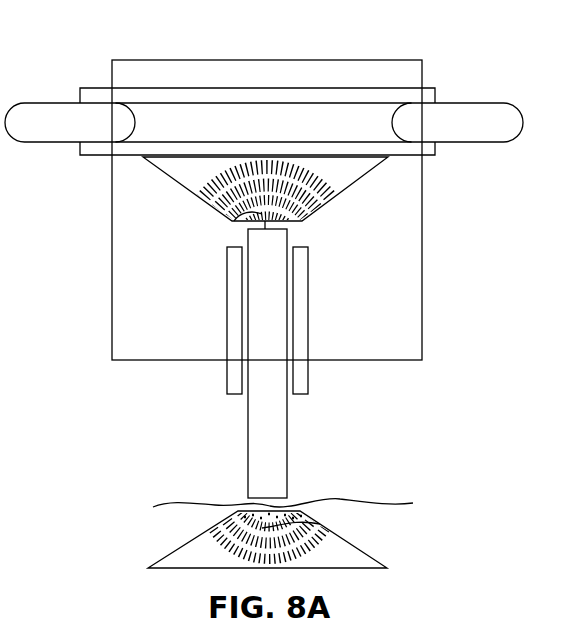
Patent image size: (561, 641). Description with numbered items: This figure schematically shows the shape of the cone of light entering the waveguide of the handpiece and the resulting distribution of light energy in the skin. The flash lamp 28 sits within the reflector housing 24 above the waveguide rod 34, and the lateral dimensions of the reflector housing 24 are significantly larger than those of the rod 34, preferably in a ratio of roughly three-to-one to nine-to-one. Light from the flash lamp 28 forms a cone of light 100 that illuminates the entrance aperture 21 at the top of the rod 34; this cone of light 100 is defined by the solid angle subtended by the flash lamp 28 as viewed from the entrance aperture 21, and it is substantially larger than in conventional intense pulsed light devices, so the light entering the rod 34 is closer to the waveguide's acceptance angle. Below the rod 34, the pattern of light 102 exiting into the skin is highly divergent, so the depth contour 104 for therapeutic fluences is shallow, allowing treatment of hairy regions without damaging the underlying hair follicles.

The entrance aperture 21 is at (233, 217).
The reflector housing 24 is at (422, 310).
The flash lamp 28 is at (370, 112).
The rod 34 is at (288, 430).
The cone of light 100 is at (352, 183).
The pattern of light 102 is at (180, 548).
The depth contour 104 is at (320, 524).